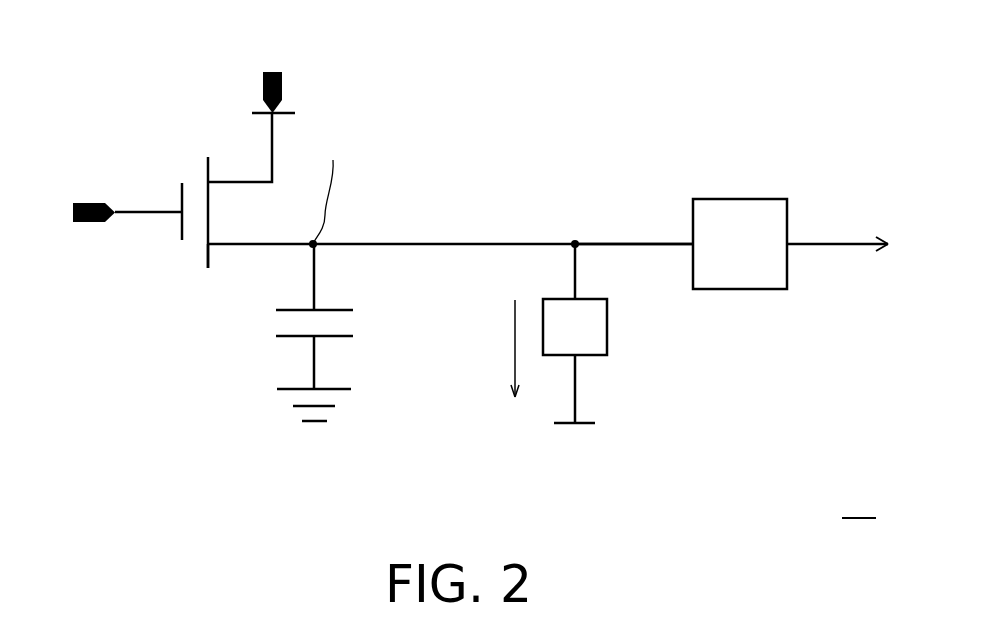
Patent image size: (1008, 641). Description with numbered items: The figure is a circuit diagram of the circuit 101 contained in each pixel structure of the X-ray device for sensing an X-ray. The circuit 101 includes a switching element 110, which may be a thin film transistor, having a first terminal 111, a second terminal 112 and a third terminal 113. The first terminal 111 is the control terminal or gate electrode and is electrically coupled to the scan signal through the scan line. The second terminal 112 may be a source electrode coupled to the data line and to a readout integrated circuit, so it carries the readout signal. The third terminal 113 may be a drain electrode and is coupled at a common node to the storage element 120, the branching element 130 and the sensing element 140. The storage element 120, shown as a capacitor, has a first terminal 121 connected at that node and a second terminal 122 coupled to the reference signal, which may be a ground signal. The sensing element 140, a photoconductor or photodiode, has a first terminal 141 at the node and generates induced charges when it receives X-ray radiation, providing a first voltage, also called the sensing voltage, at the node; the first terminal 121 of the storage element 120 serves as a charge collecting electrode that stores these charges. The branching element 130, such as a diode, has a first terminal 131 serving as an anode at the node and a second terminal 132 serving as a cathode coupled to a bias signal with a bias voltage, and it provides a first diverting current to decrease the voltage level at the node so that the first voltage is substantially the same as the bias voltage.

The circuit 101 is at (85, 67).
The switching element 110 is at (173, 120).
The first terminal 111 is at (178, 215).
The second terminal 112 is at (208, 182).
The third terminal 113 is at (208, 247).
The storage element 120 is at (362, 325).
The first terminal 121 is at (314, 277).
The second terminal 122 is at (314, 368).
The branching element 130 is at (607, 338).
The first terminal 131 is at (575, 277).
The second terminal 132 is at (575, 382).
The sensing element 140 is at (738, 199).
The first terminal 141 is at (665, 244).